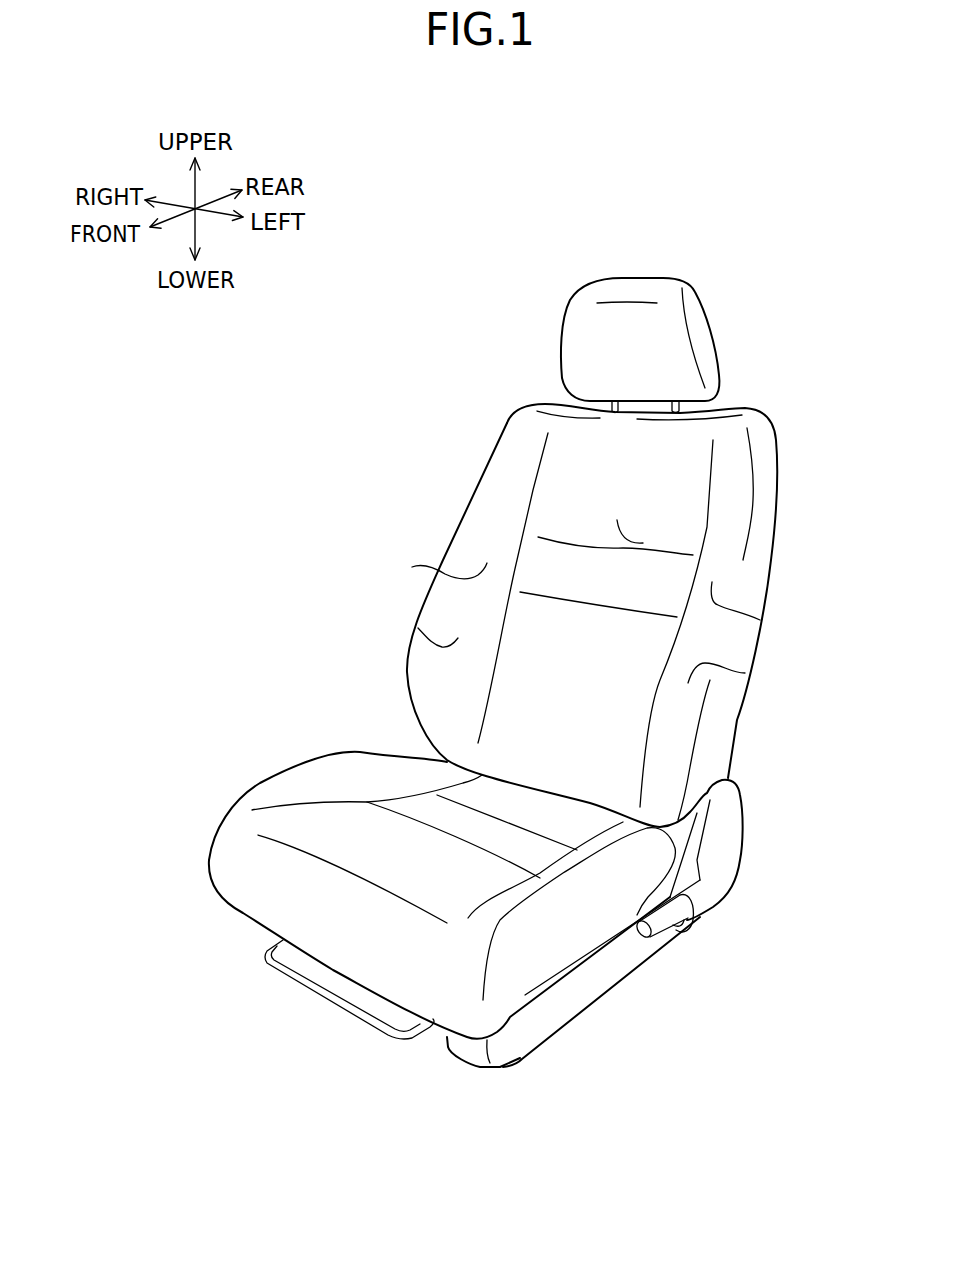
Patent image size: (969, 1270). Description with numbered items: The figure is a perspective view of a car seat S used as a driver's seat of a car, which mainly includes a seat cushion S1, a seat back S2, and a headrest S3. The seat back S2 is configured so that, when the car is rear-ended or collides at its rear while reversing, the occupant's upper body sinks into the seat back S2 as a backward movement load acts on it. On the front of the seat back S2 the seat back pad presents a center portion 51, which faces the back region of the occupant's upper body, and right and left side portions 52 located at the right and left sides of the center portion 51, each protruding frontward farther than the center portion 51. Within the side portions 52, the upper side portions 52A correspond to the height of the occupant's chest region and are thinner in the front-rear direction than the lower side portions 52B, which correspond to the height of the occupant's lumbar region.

The car seat S is at (345, 385).
The seat cushion S1 is at (303, 778).
The seat back S2 is at (478, 523).
The headrest S3 is at (663, 277).
The center portion 51 is at (640, 545).
The side portions 52 is at (345, 570).
The upper side portions 52A is at (412, 567).
The lower side portions 52B is at (418, 628).